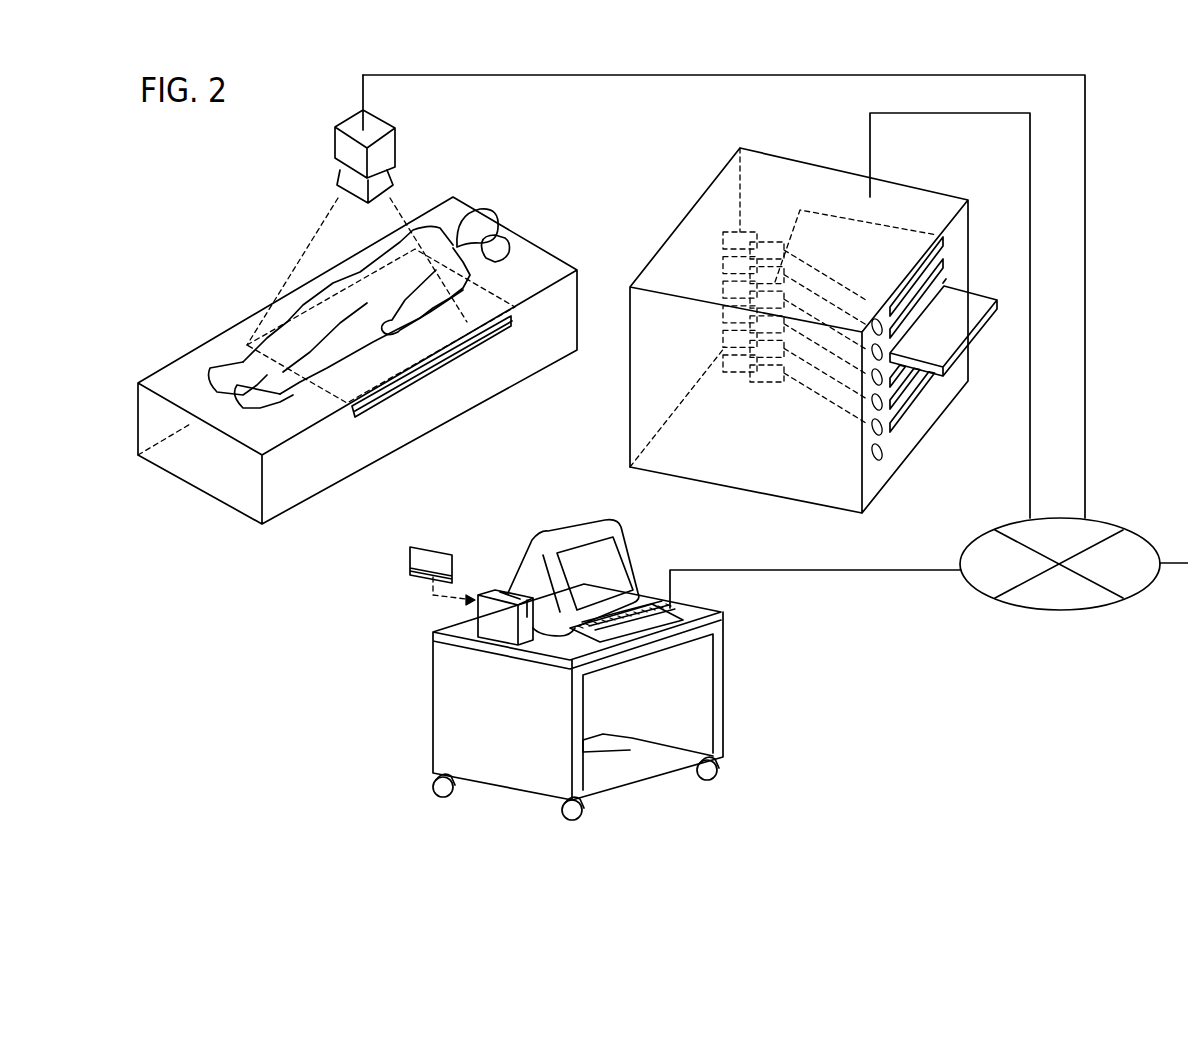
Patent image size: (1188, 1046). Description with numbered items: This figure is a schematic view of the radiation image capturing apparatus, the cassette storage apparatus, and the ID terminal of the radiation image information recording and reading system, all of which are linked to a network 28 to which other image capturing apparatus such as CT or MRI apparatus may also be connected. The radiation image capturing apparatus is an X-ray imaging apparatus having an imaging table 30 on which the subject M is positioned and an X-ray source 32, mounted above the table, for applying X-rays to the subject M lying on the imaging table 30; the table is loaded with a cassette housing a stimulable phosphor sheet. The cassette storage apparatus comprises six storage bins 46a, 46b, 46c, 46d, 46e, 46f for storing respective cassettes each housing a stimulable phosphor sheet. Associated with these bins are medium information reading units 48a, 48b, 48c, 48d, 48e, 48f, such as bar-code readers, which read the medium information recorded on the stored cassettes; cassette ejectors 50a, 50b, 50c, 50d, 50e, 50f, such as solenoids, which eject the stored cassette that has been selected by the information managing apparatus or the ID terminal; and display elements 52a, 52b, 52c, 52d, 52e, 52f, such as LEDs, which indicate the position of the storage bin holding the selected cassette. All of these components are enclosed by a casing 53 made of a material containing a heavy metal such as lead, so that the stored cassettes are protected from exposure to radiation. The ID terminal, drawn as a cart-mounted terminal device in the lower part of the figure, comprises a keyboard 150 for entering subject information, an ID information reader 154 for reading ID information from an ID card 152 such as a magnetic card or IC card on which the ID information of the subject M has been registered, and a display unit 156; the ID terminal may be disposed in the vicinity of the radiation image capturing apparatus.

The network 28 is at (1070, 612).
The imaging table 30 is at (332, 465).
The X-ray source 32 is at (390, 155).
The storage bin 46a is at (942, 248).
The storage bin 46b is at (941, 271).
The storage bin 46c is at (935, 300).
The storage bin 46d is at (916, 382).
The storage bin 46e is at (904, 404).
The storage bin 46f is at (897, 431).
The medium information reading unit 48a is at (772, 247).
The medium information reading unit 48b is at (795, 270).
The medium information reading unit 48c is at (820, 292).
The medium information reading unit 48d is at (735, 390).
The medium information reading unit 48e is at (751, 408).
The medium information reading unit 48f is at (759, 435).
The cassette ejector 50a is at (723, 244).
The cassette ejector 50b is at (723, 269).
The cassette ejector 50c is at (723, 293).
The cassette ejector 50d is at (723, 318).
The cassette ejector 50e is at (723, 342).
The cassette ejector 50f is at (723, 367).
The display element 52a is at (871, 337).
The display element 52b is at (871, 362).
The display element 52c is at (871, 387).
The display element 52d is at (871, 412).
The display element 52e is at (871, 437).
The display element 52f is at (871, 462).
The casing 53 is at (707, 472).
The subject M is at (487, 207).
The keyboard 150 is at (593, 637).
The ID card 152 is at (432, 557).
The ID information reader 154 is at (502, 630).
The display unit 156 is at (578, 562).